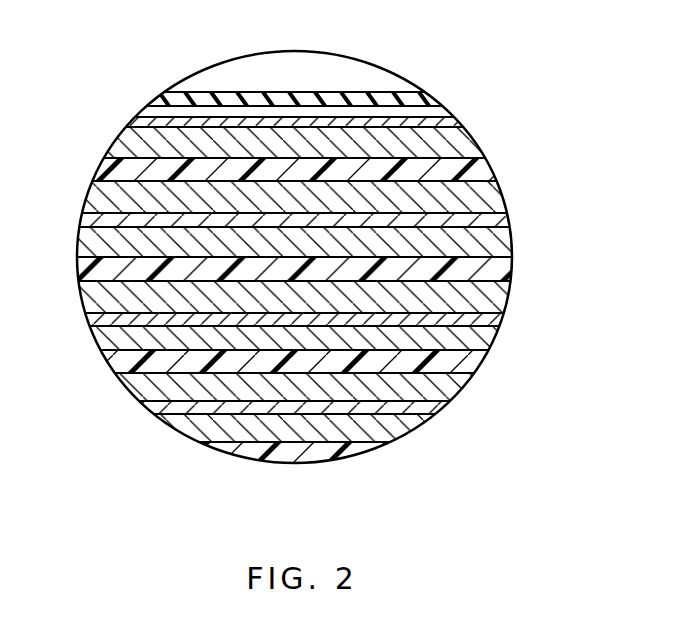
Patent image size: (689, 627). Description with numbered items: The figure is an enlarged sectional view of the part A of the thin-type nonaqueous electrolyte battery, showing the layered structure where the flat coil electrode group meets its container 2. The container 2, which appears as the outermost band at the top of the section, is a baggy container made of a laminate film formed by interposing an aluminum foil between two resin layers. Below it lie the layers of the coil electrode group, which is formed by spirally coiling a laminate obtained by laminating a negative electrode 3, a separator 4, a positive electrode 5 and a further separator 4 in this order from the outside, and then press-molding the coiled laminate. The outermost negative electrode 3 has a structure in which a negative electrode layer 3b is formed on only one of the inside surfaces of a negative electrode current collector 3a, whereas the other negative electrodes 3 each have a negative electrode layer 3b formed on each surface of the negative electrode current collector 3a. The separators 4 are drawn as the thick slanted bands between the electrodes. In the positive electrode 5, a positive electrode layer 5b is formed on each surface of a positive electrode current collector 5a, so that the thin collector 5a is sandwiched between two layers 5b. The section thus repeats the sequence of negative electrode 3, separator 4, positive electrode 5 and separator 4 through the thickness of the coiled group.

The part A is at (198, 87).
The container 2 is at (423, 100).
The negative electrode 3 is at (335, 228).
The negative electrode current collector 3a is at (452, 122).
The negative electrode layer 3b is at (448, 145).
The separator 4 is at (120, 172).
The positive electrode 5 is at (335, 329).
The positive electrode current collector 5a is at (482, 222).
The positive electrode layer 5b is at (472, 205).